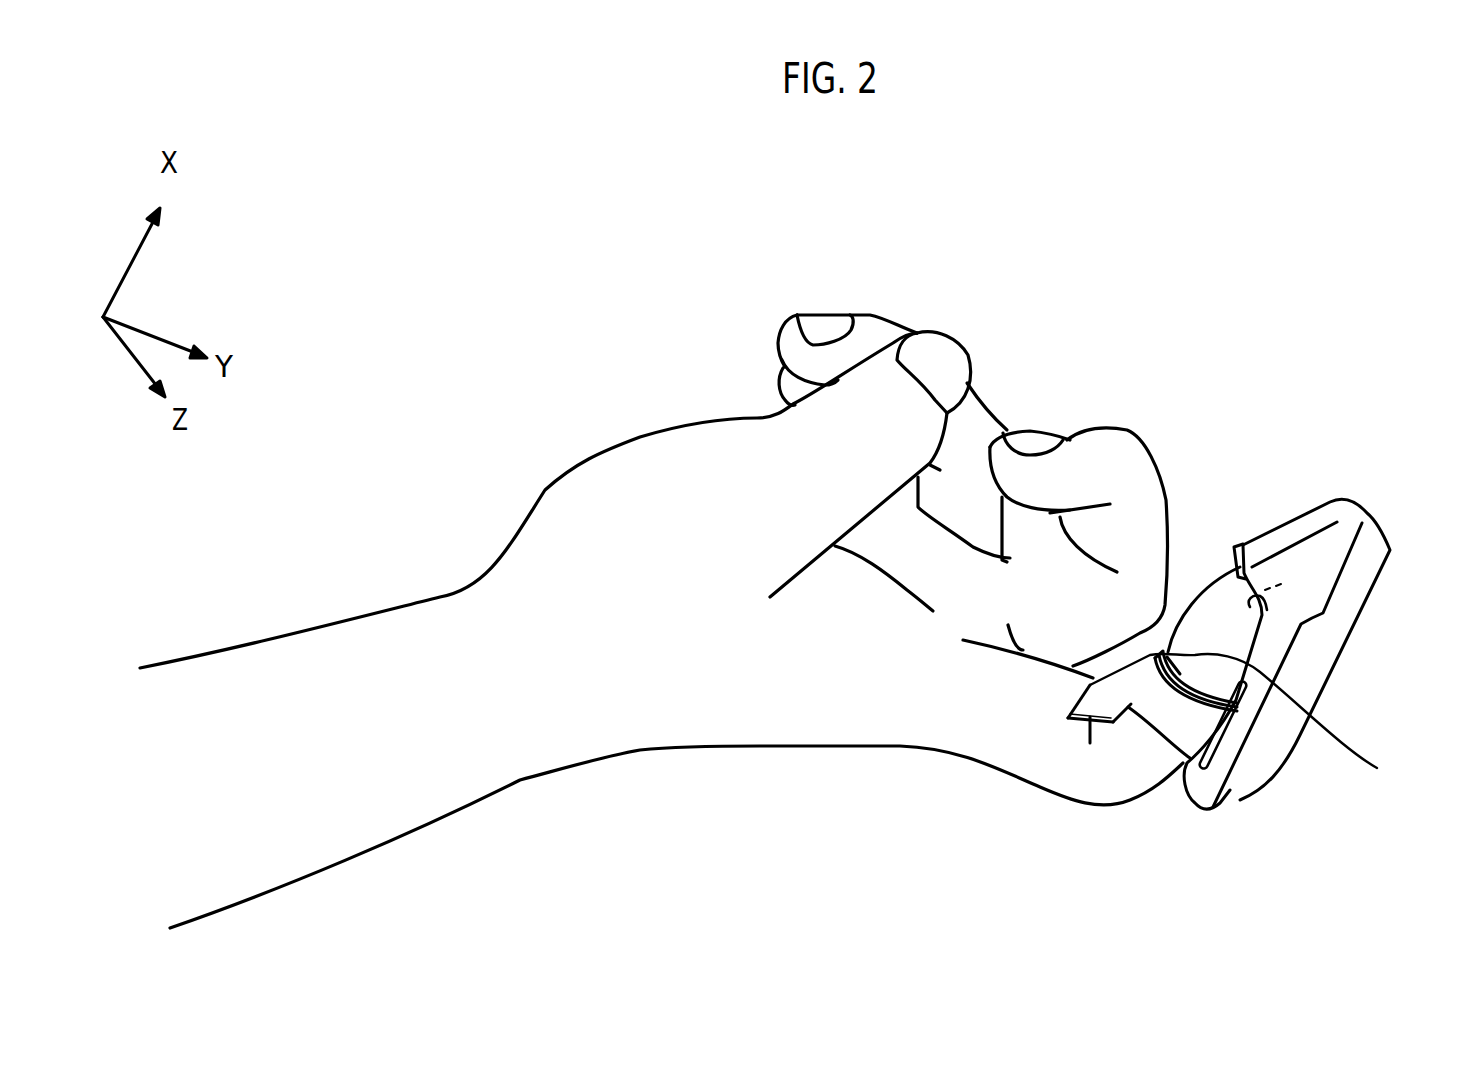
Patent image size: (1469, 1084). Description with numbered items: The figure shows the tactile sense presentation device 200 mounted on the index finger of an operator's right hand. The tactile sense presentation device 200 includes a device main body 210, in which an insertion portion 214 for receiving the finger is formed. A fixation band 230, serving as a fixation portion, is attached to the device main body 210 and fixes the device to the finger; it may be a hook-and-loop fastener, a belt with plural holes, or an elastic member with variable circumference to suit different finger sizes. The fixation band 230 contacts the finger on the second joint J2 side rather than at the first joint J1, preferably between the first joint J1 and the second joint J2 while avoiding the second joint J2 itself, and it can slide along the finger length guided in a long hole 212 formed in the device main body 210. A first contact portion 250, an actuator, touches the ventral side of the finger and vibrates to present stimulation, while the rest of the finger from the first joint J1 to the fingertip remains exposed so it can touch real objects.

The tactile sense presentation device 200 is at (1420, 420).
The device main body 210 is at (1302, 516).
The long hole 212 is at (1240, 702).
The insertion portion 214 is at (1250, 607).
The fixation band 230 is at (1103, 683).
The first contact portion 250 is at (1240, 568).
The first joint J1 is at (1249, 721).
The second joint J2 is at (1087, 728).